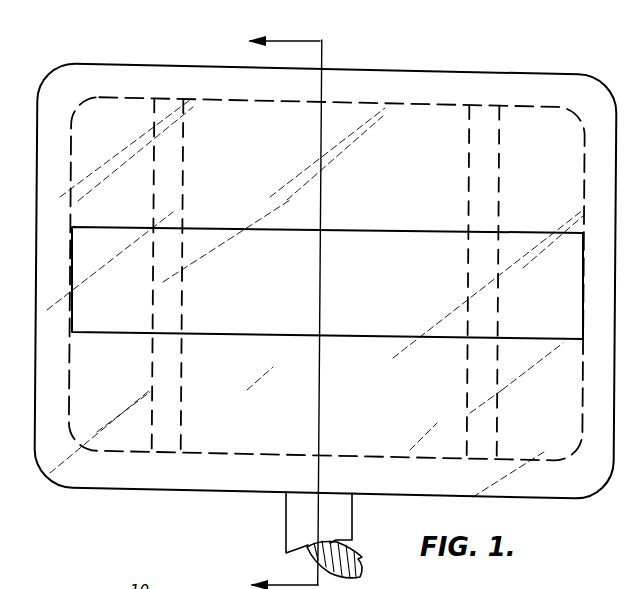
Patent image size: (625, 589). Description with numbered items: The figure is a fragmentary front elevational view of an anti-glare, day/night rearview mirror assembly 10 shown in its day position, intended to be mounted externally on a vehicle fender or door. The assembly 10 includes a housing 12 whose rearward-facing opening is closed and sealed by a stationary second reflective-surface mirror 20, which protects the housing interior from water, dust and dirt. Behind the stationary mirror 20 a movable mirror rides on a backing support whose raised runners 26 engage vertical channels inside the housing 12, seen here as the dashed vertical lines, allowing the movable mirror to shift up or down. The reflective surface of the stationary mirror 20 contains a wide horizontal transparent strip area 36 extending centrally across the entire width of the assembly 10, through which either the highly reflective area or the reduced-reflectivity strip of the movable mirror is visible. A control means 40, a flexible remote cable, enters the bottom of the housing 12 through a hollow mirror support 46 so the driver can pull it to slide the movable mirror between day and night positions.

The rearview mirror assembly 10 is at (325, 303).
The housing 12 is at (452, 47).
The stationary second reflective-surface mirror 20 is at (286, 142).
The runners 26 is at (167, 145).
The transparent strip area 36 is at (420, 292).
The hollow mirror support 46 is at (298, 508).
The control means 40 is at (356, 548).